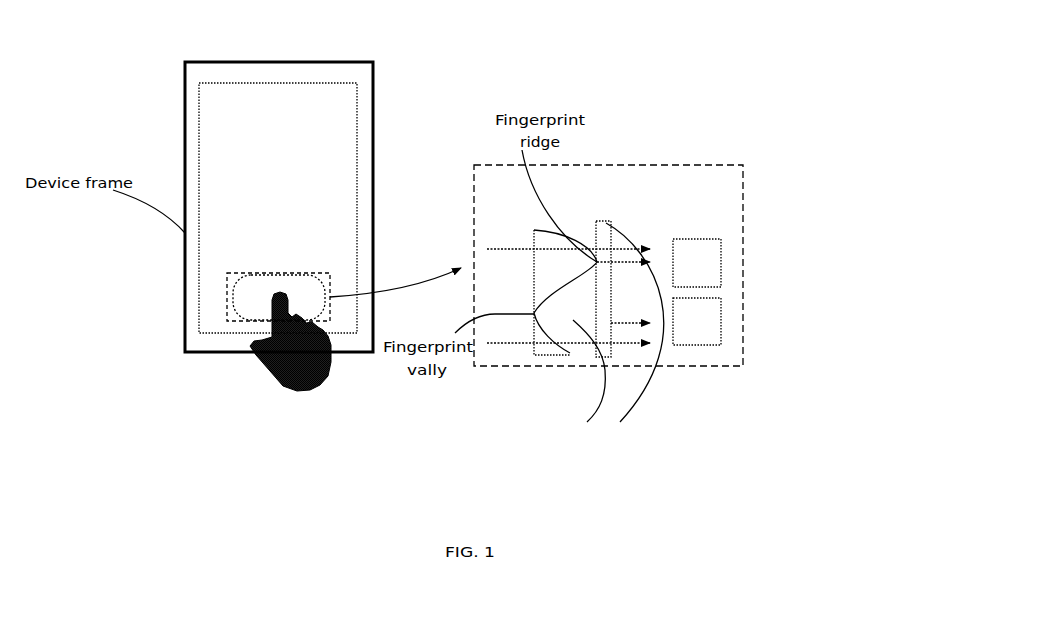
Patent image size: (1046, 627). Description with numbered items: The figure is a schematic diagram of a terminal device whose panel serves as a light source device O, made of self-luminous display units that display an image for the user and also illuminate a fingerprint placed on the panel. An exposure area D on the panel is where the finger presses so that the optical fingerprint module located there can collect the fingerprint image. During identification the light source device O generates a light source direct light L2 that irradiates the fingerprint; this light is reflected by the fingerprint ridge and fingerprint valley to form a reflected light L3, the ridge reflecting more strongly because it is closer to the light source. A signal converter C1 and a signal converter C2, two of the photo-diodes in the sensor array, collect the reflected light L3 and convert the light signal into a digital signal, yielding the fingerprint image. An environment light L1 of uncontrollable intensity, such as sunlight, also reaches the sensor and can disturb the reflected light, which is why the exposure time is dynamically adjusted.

The light source device O is at (605, 221).
The exposure area D is at (227, 295).
The environment light L1 is at (433, 423).
The light source direct light L2 is at (633, 323).
The reflected light L3 is at (608, 352).
The signal converter C1 is at (721, 277).
The signal converter C2 is at (721, 323).